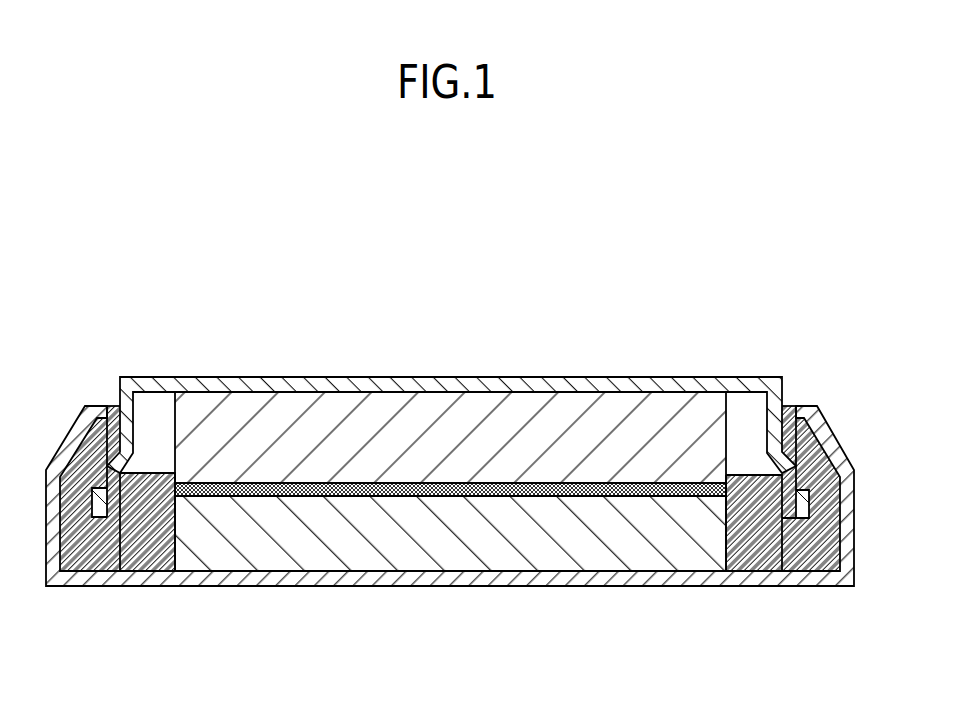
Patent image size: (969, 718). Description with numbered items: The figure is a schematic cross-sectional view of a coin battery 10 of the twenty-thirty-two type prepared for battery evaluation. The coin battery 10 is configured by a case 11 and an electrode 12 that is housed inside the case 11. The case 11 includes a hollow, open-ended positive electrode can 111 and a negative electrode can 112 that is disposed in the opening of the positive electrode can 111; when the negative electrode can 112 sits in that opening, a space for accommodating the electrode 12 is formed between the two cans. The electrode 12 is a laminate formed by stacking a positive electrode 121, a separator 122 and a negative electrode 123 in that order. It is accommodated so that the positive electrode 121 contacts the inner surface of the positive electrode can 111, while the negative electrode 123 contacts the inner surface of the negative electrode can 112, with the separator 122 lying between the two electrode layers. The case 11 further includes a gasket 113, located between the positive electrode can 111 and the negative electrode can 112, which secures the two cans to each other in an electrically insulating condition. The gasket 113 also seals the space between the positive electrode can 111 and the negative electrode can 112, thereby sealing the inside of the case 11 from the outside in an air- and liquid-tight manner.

The coin battery 10 is at (808, 266).
The case 11 is at (197, 314).
The positive electrode can 111 is at (57, 437).
The negative electrode can 112 is at (188, 386).
The gasket 113 is at (101, 428).
The electrode 12 is at (290, 650).
The positive electrode 121 is at (311, 557).
The separator 122 is at (452, 497).
The negative electrode 123 is at (598, 462).